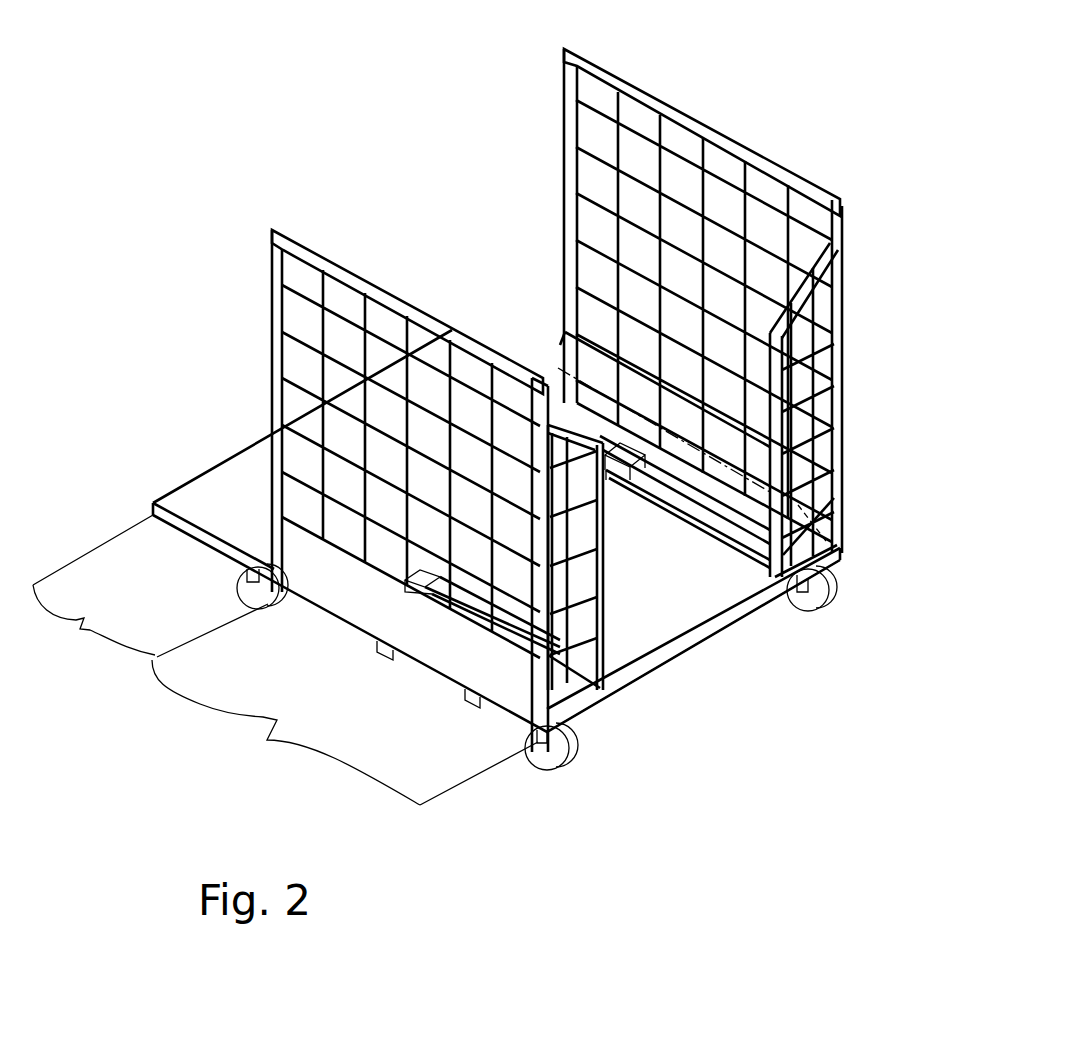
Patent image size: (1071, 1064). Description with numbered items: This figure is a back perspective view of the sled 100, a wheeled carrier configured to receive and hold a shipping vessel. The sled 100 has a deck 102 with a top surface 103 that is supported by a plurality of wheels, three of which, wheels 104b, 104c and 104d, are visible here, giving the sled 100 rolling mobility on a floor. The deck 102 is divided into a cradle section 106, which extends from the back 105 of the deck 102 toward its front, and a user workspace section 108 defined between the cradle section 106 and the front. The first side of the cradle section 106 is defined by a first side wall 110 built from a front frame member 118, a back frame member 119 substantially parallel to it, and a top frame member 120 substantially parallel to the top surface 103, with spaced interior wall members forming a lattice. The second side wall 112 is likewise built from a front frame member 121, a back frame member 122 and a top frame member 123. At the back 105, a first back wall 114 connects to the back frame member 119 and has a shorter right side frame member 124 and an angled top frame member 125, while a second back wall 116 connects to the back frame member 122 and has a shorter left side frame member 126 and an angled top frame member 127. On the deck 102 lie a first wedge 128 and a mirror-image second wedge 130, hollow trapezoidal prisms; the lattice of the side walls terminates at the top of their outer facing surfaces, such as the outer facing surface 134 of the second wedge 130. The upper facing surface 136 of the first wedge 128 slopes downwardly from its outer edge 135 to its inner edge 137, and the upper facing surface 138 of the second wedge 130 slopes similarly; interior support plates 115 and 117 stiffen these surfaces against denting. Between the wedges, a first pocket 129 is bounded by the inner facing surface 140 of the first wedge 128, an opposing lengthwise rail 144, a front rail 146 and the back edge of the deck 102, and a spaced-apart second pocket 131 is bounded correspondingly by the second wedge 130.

The sled 100 is at (722, 58).
The deck 102 is at (225, 435).
The top surface 103 is at (205, 500).
The wheel 104b is at (264, 610).
The wheel 104c is at (802, 612).
The wheel 104d is at (552, 772).
The back 105 is at (705, 633).
The cradle section 106 is at (286, 732).
The user workspace section 108 is at (94, 622).
The first side wall 110 is at (703, 108).
The second side wall 112 is at (329, 239).
The first back wall 114 is at (815, 260).
The interior support plate 115 is at (836, 550).
The second back wall 116 is at (567, 410).
The interior support plate 117 is at (577, 712).
The front frame member 118 is at (565, 212).
The back frame member 119 is at (844, 393).
The top frame member 120 is at (757, 154).
The front frame member 121 is at (272, 302).
The back frame member 122 is at (512, 650).
The top frame member 123 is at (385, 285).
The right side frame member 124 is at (762, 407).
The top frame member 125 is at (815, 300).
The left side frame member 126 is at (607, 585).
The top frame member 127 is at (580, 412).
The first wedge 128 is at (557, 340).
The first pocket 129 is at (690, 508).
The second wedge 130 is at (590, 695).
The second pocket 131 is at (424, 596).
The outer facing surface 134 is at (392, 618).
The outer edge 135 is at (622, 362).
The upper facing surface 136 is at (838, 478).
The inner edge 137 is at (618, 442).
The upper facing surface 138 is at (590, 670).
The inner facing surface 140 is at (655, 478).
The lengthwise rail 144 is at (725, 540).
The front rail 146 is at (640, 456).